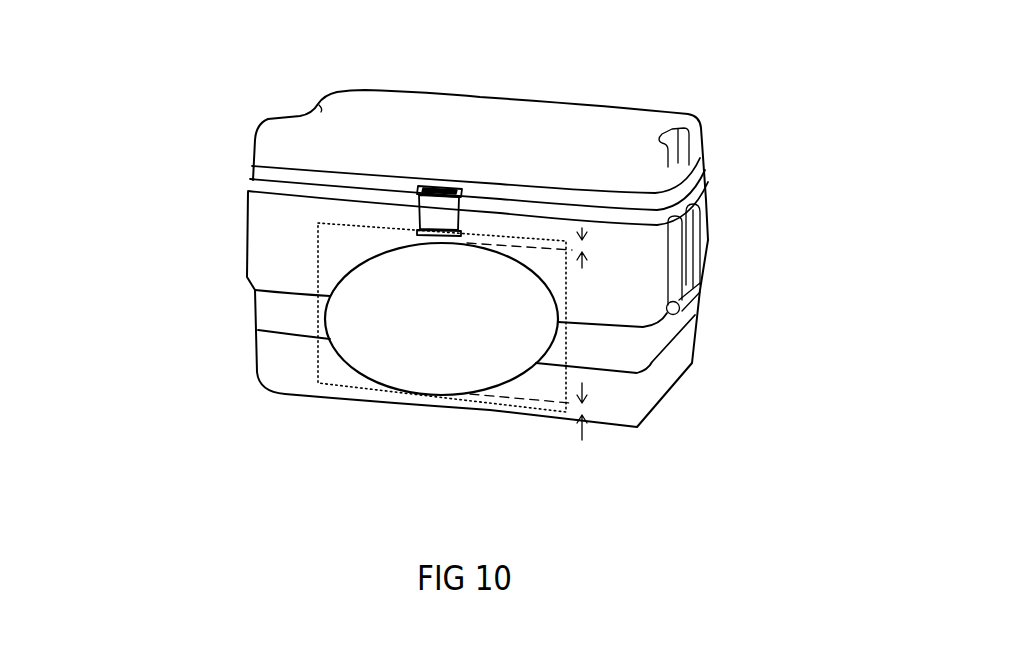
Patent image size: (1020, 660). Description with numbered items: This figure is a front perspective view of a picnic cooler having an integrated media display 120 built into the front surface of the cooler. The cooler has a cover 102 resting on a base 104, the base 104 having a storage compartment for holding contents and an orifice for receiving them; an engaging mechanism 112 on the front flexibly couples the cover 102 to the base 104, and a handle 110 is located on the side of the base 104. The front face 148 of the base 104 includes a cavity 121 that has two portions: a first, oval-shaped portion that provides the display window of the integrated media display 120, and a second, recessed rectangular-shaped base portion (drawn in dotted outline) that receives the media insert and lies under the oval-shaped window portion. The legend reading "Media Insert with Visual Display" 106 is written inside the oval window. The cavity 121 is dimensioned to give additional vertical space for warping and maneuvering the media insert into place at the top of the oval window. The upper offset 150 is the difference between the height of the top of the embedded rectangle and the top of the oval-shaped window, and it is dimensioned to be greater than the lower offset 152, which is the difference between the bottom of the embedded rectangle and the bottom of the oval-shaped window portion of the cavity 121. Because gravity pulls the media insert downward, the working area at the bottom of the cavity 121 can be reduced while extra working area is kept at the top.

The cover 102 is at (566, 97).
The base 104 is at (652, 402).
The media insert with visual display 106 is at (465, 371).
The handle 110 is at (682, 306).
The engaging mechanism 112 is at (417, 197).
The integrated media display 120 is at (503, 387).
The cavity 121 is at (340, 243).
The front face 148 is at (284, 248).
The offset O_A 150 is at (586, 253).
The offset O_B 152 is at (592, 416).